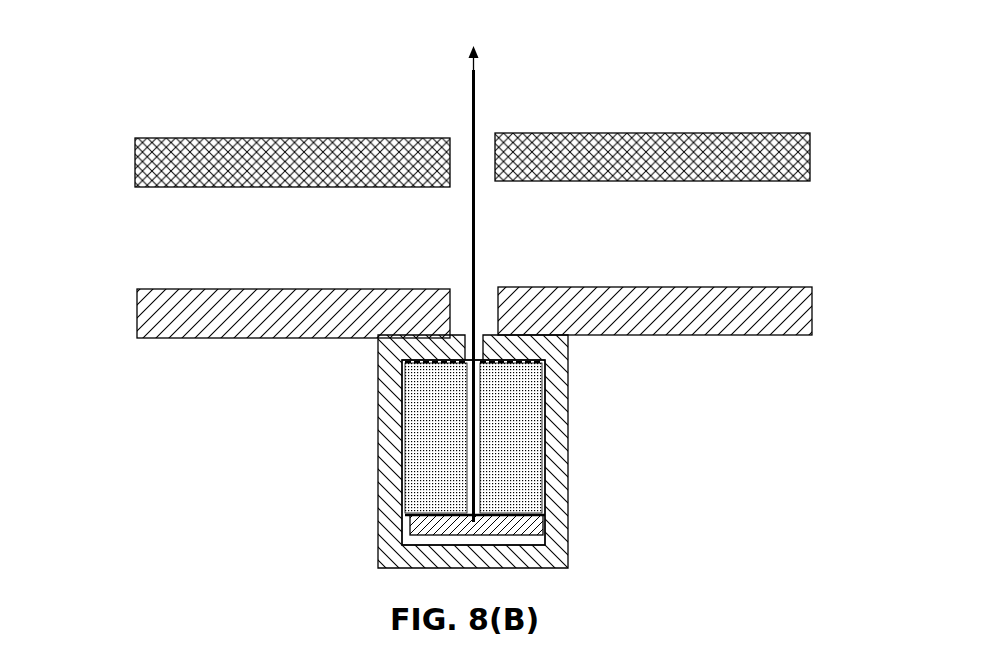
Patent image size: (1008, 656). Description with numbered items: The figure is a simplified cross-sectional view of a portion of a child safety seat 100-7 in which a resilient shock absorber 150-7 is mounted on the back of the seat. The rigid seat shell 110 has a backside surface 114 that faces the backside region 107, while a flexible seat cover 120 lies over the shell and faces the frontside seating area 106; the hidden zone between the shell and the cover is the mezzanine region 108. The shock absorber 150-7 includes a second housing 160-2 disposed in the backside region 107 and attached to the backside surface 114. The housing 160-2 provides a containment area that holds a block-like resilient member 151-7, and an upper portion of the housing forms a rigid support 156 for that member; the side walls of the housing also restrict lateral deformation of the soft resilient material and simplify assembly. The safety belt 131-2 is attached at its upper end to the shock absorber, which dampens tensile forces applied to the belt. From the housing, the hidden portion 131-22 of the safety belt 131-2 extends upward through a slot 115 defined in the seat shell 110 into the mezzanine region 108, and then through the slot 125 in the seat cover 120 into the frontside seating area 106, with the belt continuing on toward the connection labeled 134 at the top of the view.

The safety seat 100-7 is at (223, 92).
The seating area 106 is at (322, 100).
The backside region 107 is at (298, 467).
The mezzanine region 108 is at (290, 256).
The seat shell 110 is at (675, 285).
The backside surface 114 is at (752, 335).
The slot 115 is at (482, 282).
The seat cover 120 is at (727, 130).
The slot 125 is at (485, 143).
The safety belt 131-2 is at (468, 107).
The hidden portion of safety belt 131-22 is at (469, 260).
The external connection 134 is at (468, 28).
The resilient shock absorber 150-7 is at (340, 427).
The resilient member 151-7 is at (522, 465).
The rigid support 156 is at (437, 362).
The second housing 160-2 is at (590, 430).